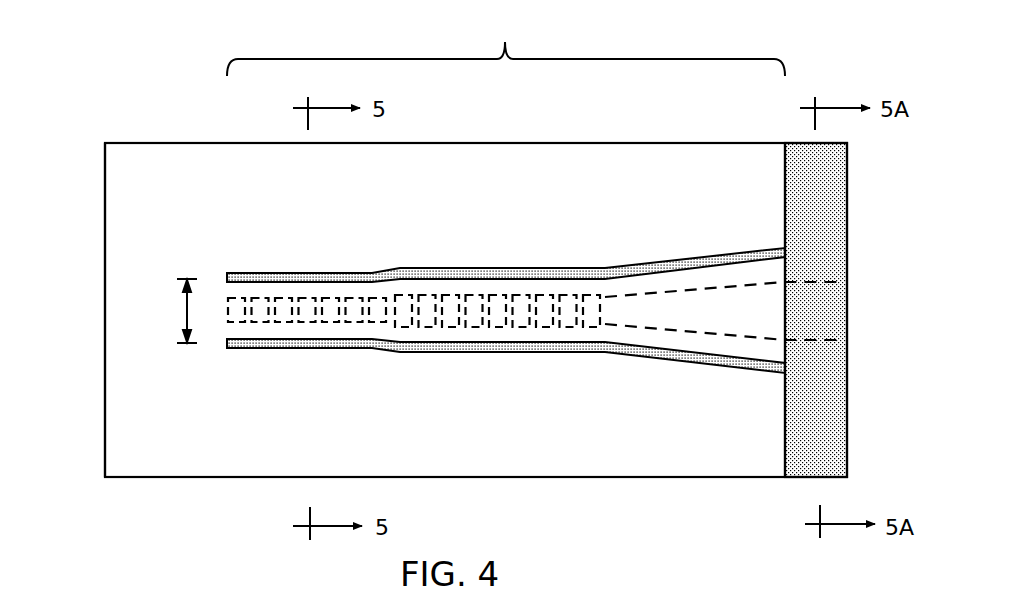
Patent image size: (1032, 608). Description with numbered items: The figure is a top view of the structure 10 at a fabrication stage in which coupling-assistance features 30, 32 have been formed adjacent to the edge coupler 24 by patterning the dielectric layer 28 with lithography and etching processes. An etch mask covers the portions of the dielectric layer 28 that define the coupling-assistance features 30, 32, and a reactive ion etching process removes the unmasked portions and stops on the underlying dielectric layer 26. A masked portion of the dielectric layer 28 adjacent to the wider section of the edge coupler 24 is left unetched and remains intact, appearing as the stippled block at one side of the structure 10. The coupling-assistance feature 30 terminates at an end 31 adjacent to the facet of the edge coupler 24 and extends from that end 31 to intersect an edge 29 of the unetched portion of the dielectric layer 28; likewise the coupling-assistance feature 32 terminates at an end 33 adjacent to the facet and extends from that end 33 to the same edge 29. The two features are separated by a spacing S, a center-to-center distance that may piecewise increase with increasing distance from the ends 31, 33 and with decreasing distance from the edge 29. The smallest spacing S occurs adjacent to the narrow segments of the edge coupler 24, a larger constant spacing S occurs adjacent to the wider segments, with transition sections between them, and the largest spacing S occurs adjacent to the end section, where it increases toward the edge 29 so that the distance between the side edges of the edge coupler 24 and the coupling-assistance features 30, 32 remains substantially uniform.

The structure 10 is at (98, 102).
The edge coupler 24 is at (506, 45).
The dielectric layer 26 is at (143, 366).
The dielectric layer 28 is at (815, 425).
The edge of the unetched portion of the dielectric layer 29 is at (785, 220).
The coupling-assistance feature 30 is at (455, 268).
The end 31 is at (227, 275).
The coupling-assistance feature 32 is at (457, 352).
The end 33 is at (228, 345).
The spacing S is at (174, 311).